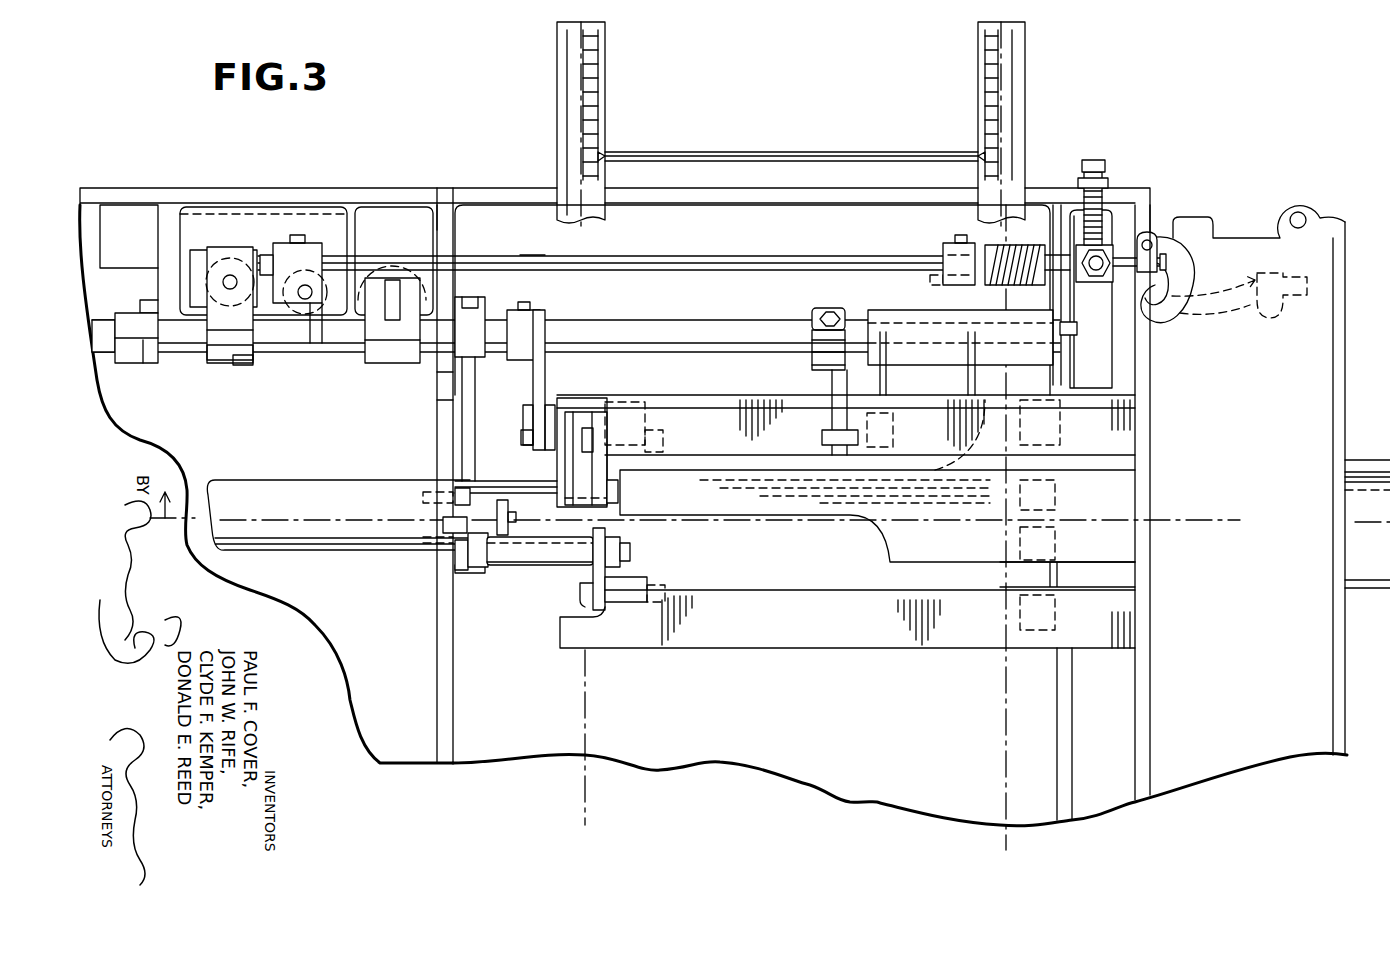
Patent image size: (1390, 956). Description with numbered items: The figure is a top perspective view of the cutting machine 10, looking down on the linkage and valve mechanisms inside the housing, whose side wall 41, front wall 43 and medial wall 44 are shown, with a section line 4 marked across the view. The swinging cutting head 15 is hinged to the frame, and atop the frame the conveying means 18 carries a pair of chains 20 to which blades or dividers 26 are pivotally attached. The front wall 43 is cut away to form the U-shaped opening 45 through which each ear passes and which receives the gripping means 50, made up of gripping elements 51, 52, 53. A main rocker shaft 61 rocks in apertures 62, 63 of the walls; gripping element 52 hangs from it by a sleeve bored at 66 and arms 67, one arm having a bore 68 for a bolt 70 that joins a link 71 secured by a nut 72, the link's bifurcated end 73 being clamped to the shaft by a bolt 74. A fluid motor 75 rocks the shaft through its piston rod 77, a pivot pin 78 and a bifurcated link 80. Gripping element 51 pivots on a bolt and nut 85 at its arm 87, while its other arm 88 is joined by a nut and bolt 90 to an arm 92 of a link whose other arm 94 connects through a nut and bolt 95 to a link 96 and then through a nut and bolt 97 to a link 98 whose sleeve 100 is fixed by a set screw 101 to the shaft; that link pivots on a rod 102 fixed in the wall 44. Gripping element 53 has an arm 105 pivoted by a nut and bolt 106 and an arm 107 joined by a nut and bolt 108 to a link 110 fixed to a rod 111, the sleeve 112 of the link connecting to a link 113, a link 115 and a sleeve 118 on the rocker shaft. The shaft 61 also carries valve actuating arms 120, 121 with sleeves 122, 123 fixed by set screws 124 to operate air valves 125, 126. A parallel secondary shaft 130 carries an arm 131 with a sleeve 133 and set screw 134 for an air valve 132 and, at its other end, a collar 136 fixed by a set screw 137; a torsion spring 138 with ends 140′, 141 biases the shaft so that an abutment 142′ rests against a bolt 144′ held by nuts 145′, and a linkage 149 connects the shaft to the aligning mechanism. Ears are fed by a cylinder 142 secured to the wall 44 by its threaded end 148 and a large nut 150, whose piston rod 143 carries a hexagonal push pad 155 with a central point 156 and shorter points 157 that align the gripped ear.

The section line 4- 4 is at (768, 514).
The cutting machine 10 is at (471, 157).
The swinging cutting head 15 is at (1228, 480).
The conveying means 18 is at (1037, 54).
The chains 20 is at (600, 105).
The blades or dividers 26 is at (780, 150).
The side wall 41 is at (392, 188).
The front wall 43 is at (1080, 366).
The medial wall 44 is at (455, 695).
The U-shaped opening 45 is at (1082, 390).
The gripping or holding means 50 is at (846, 531).
The gripping element 51 is at (712, 398).
The gripping element 52 is at (745, 498).
The gripping element 53 is at (738, 636).
The main rocker shaft 61 is at (700, 335).
The aperture 62 is at (1080, 330).
The aperture 63 is at (437, 380).
The bore 66 is at (957, 322).
The integral arms 67 is at (883, 384).
The bore 68 is at (880, 425).
The bolt 70 is at (895, 440).
The link 71 is at (826, 374).
The nut 72 is at (830, 430).
The upper bifurcated end 73 is at (812, 314).
The bolt 74 is at (834, 306).
The fluid motor 75 is at (380, 262).
The piston rod 77 is at (392, 280).
The pivot pin 78 is at (455, 275).
The bifurcated link 80 is at (375, 362).
The bolt and nut 85 is at (1080, 478).
The arm 87 is at (1060, 443).
The arm 88 is at (625, 412).
The nut and bolt 90 is at (660, 428).
The arm 92 is at (612, 472).
The arm 94 is at (572, 420).
The nut and bolt 95 is at (523, 438).
The link 96 is at (550, 405).
The nut and bolt 97 is at (525, 405).
The link 98 is at (545, 345).
The sleeve portion 100 is at (540, 320).
The radial set screw 101 is at (538, 270).
The rod 102 is at (480, 481).
The integral arm 105 is at (1030, 573).
The nut and bolt 106 is at (1080, 586).
The integral arm 107 is at (636, 578).
The nut and bolt 108 is at (580, 600).
The link 110 is at (592, 563).
The rod 111 is at (537, 587).
The sleeve 112 is at (467, 572).
The link 113 is at (465, 572).
The link 115 is at (437, 400).
The sleeve 118 is at (474, 322).
The valve actuating arm 120 is at (128, 363).
The valve actuating arm 121 is at (228, 258).
The sleeve portion 122 is at (152, 363).
The sleeve portion 123 is at (240, 362).
The set screws 124 is at (150, 305).
The air valve 125 is at (118, 212).
The air valve 126 is at (218, 262).
The secondary shaft 130 is at (796, 262).
The arm 131 is at (305, 303).
The air valve 132 is at (332, 323).
The sleeve 133 is at (283, 242).
The set screw 134 is at (297, 235).
The collar 136 is at (945, 248).
The radial set screw 137 is at (960, 235).
The torsion spring 138 is at (1020, 248).
The spring end 140′ is at (943, 282).
The spring end 141 is at (1084, 291).
The cylinder 142 is at (273, 495).
The abutment 142′ is at (1103, 256).
The piston rod 143 is at (459, 534).
The bolt 144′ is at (1104, 166).
The nuts 145′ is at (1080, 181).
The threaded end portion 148 is at (423, 497).
The linkage 149 is at (1180, 312).
The large nut 150 is at (458, 490).
The push pad 155 is at (502, 500).
The central point 156 is at (522, 522).
The shorter point 157 is at (488, 567).